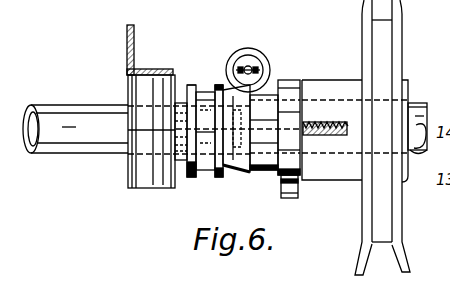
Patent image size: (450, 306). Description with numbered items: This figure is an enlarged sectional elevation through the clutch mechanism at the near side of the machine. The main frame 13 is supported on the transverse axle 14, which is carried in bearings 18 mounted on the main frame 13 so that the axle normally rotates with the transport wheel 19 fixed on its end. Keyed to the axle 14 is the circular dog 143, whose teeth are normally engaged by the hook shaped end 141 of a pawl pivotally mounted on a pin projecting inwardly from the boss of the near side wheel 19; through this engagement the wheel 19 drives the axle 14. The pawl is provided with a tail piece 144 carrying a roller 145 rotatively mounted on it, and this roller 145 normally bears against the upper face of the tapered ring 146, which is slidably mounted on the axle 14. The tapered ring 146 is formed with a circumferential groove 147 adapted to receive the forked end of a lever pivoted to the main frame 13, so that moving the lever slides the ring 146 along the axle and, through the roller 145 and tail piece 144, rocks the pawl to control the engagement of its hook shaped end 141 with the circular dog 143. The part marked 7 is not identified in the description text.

The main frame 13 is at (126, 40).
The transverse axle 14 is at (69, 112).
The bearings 18 is at (148, 184).
The circumferential groove 147 is at (206, 92).
The flange 7 is at (213, 85).
The tapered ring 146 is at (237, 177).
The tail piece 144 is at (277, 82).
The roller 145 is at (266, 54).
The circular dog 143 is at (295, 112).
The hook shaped end 141 is at (292, 186).
The transport wheel 19 is at (382, 212).